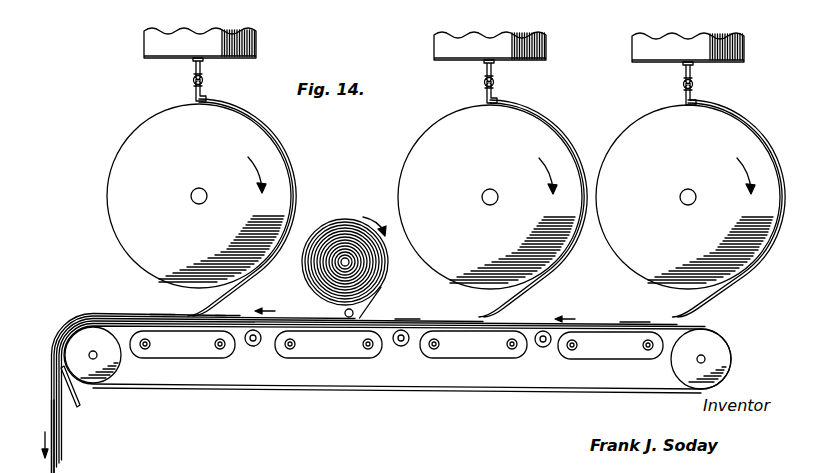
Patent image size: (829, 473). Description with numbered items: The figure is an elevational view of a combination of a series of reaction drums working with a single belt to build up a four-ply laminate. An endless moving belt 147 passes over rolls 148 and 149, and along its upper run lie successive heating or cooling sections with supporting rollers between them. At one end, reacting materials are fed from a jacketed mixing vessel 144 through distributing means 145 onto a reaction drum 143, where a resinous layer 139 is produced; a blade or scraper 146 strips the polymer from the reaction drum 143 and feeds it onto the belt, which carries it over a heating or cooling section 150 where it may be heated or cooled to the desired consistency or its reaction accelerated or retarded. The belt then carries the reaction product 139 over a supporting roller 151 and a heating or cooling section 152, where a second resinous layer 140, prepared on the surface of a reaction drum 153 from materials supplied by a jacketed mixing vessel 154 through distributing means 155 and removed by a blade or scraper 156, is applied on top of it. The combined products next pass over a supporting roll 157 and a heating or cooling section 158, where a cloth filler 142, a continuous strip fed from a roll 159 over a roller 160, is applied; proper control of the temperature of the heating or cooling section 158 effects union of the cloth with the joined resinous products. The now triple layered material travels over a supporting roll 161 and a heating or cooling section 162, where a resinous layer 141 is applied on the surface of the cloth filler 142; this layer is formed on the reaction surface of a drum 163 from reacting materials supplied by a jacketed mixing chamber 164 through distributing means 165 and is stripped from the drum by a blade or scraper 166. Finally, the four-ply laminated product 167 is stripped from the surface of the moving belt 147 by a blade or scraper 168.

The resinous layer 139 is at (637, 314).
The resinous layer 140 is at (412, 312).
The resinous layer 141 is at (149, 312).
The cloth filler 142 is at (226, 318).
The reaction drum 143 is at (638, 125).
The jacketed mixing vessel 144 is at (744, 44).
The distributing means 145 is at (690, 88).
The blade or scraper 146 is at (680, 312).
The endless moving belt 147 is at (707, 326).
The roll 148 is at (720, 350).
The roll 149 is at (103, 382).
The heating or cooling section 150 is at (612, 357).
The supporting roller 151 is at (542, 348).
The heating or cooling section 152 is at (477, 357).
The reaction drum 153 is at (427, 140).
The jacketed mixing vessel 154 is at (549, 44).
The distributing means 155 is at (500, 84).
The blade or scraper 156 is at (484, 307).
The supporting roll 157 is at (403, 348).
The heating or cooling section 158 is at (339, 357).
The roll 159 is at (340, 218).
The roller 160 is at (342, 316).
The supporting roll 161 is at (254, 348).
The heating or cooling section 162 is at (202, 355).
The reaction drum 163 is at (132, 140).
The jacketed mixing chamber 164 is at (256, 44).
The distributing means 165 is at (207, 84).
The blade or scraper 166 is at (196, 303).
The four-ply laminated product 167 is at (63, 415).
The blade or scraper 168 is at (75, 398).